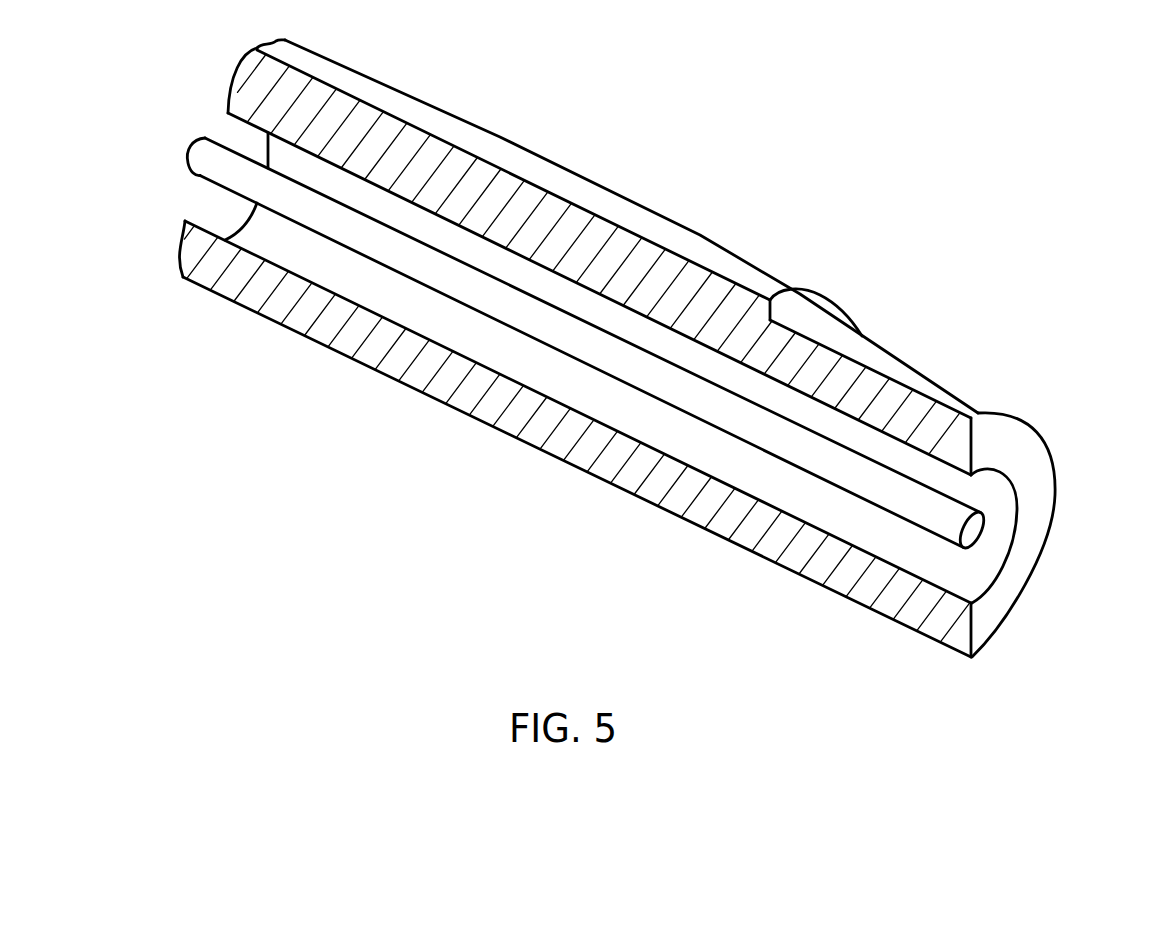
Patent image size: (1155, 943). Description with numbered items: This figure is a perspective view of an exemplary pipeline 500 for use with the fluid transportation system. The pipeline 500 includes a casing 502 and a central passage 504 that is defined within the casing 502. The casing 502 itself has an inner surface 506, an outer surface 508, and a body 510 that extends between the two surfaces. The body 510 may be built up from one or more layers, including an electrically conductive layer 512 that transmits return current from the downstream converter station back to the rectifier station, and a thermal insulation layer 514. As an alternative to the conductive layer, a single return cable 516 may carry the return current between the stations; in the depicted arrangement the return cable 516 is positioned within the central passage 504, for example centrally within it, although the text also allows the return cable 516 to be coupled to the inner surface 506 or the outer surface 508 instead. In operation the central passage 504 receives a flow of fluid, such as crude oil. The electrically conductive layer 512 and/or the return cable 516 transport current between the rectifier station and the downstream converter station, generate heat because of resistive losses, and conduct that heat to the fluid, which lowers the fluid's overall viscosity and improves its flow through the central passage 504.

The pipeline 500 is at (890, 117).
The casing 502 is at (872, 318).
The central passage 504 is at (995, 532).
The inner surface 506 is at (765, 377).
The outer surface 508 is at (738, 259).
The body 510 is at (566, 232).
The electrically conductive layer 512 is at (957, 392).
The thermal insulation layer 514 is at (822, 307).
The return cable 516 is at (495, 323).